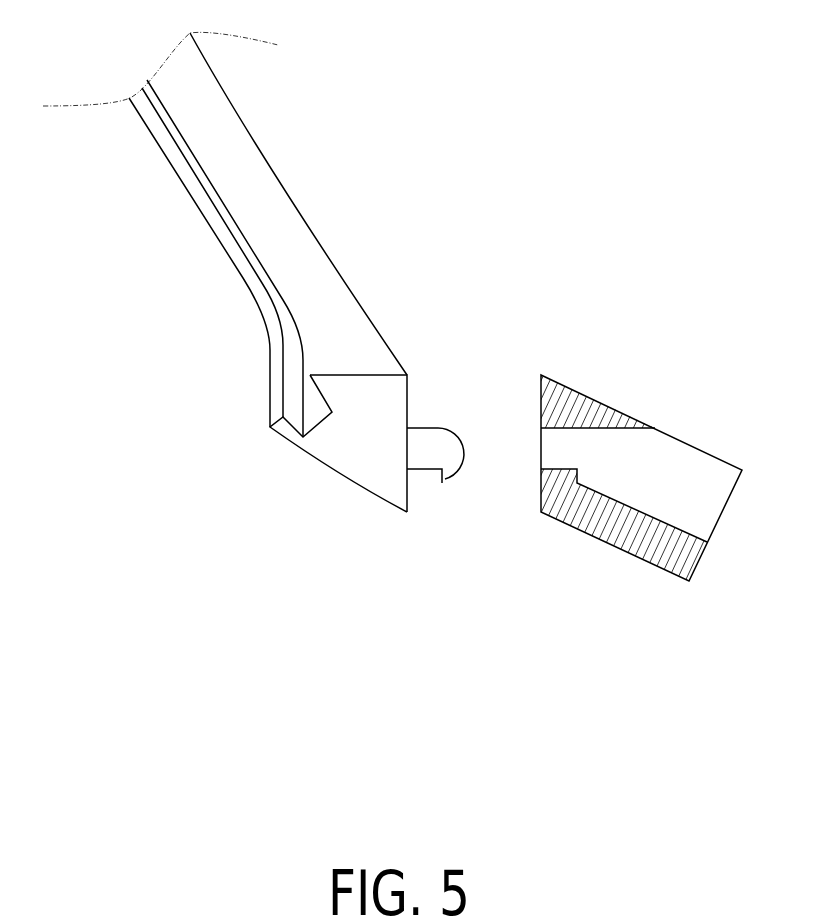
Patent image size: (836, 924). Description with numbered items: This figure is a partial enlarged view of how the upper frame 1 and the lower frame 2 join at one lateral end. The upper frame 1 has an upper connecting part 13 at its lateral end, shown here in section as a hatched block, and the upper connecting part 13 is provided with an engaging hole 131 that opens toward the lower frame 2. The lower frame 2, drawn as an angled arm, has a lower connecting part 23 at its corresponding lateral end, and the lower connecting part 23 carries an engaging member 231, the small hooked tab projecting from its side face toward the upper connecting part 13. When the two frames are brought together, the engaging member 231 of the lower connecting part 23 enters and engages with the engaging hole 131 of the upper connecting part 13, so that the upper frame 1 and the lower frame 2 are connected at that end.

The upper frame 1 is at (652, 542).
The upper connecting part 13 is at (541, 397).
The engaging hole 131 is at (575, 450).
The lower frame 2 is at (267, 215).
The lower connecting part 23 is at (408, 402).
The engaging member 231 is at (422, 455).